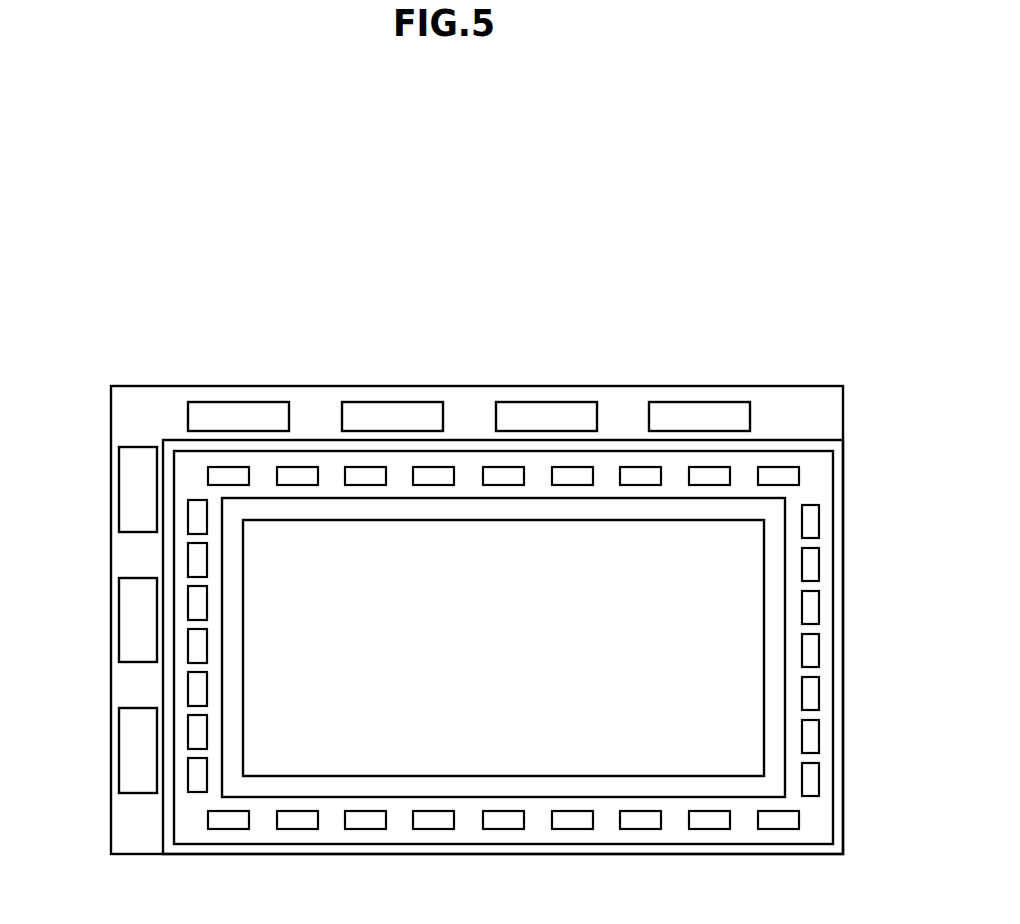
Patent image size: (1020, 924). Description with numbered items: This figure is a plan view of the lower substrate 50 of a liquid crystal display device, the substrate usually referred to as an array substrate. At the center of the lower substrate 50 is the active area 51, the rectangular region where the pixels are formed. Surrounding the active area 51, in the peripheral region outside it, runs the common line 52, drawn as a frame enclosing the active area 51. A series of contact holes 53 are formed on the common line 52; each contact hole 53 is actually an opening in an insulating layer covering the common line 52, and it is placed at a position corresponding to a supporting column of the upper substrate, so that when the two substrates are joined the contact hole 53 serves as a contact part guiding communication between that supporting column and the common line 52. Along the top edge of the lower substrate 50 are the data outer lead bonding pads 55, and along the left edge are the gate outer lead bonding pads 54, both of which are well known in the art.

The lower substrate 50 is at (615, 300).
The active area 51 is at (510, 657).
The common line 52 is at (820, 813).
The contact hole 53 is at (780, 477).
The gate outer lead bonding pad 54 is at (130, 627).
The data outer lead bonding pad 55 is at (395, 413).